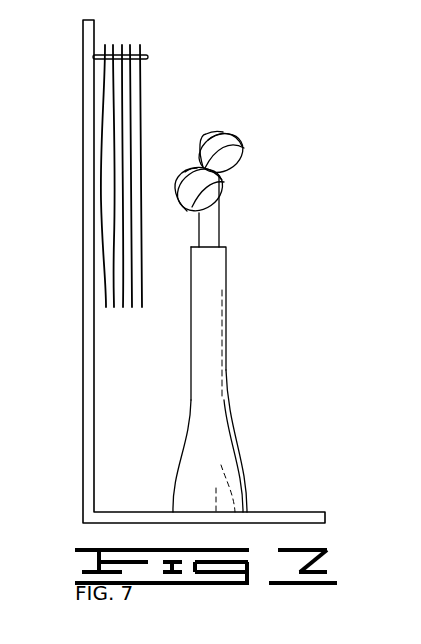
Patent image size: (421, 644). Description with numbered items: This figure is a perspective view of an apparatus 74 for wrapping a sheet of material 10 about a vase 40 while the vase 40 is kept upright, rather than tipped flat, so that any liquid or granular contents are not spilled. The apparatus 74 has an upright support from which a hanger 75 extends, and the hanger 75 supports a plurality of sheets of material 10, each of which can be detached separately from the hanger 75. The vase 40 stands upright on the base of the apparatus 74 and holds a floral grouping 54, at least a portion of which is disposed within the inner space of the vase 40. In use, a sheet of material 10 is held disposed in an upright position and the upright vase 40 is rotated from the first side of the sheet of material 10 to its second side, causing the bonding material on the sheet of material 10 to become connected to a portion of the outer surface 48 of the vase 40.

The apparatus 74 is at (66, 229).
The hanger 75 is at (148, 57).
The sheet of material 10 is at (142, 118).
The floral grouping 54 is at (240, 138).
The outer surface 48 is at (215, 338).
The vase 40 is at (228, 420).